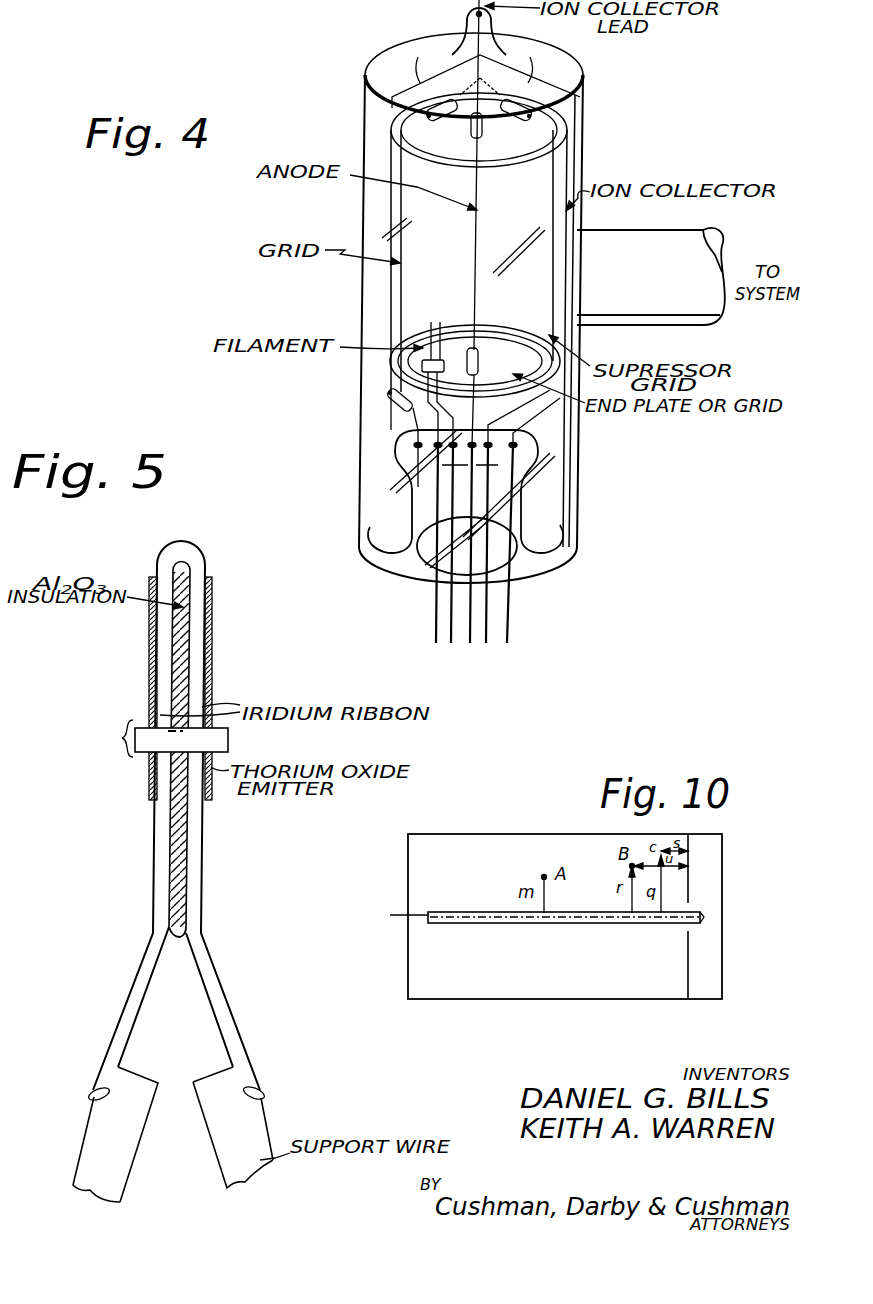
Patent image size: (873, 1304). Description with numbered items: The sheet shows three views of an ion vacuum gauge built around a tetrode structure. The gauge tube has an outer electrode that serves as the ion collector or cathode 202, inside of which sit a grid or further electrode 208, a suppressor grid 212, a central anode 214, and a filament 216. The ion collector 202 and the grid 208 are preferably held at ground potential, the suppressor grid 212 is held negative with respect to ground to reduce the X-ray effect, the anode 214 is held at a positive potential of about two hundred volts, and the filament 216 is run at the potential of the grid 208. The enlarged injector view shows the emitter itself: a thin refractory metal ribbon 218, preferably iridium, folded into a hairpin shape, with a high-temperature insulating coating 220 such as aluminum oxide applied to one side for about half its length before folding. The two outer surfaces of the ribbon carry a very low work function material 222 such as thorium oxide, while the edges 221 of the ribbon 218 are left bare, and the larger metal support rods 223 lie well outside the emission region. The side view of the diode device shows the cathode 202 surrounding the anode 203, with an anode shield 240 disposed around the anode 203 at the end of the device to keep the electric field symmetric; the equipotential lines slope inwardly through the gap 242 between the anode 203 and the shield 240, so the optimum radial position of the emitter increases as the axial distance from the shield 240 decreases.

In FIG. 4, the ion collector 202 is at (391, 202).
In FIG. 10, the ion collector 202 is at (585, 834).
In FIG. 4, the suppressor grid 212 is at (401, 283).
In FIG. 4, the grid 208 is at (401, 306).
In FIG. 4, the anode 214 is at (478, 247).
In FIG. 4, the filament 216 is at (433, 324).
In FIG. 5, the ribbon 218 is at (197, 903).
In FIG. 5, the insulating coating 220 is at (183, 822).
In FIG. 5, the edges 221 is at (195, 862).
In FIG. 5, the low work function material 222 is at (150, 680).
In FIG. 5, the metal support rods 223 is at (92, 1132).
In FIG. 10, the anode 203 is at (535, 925).
In FIG. 10, the anode shield 240 is at (688, 897).
In FIG. 10, the gap 242 is at (700, 921).